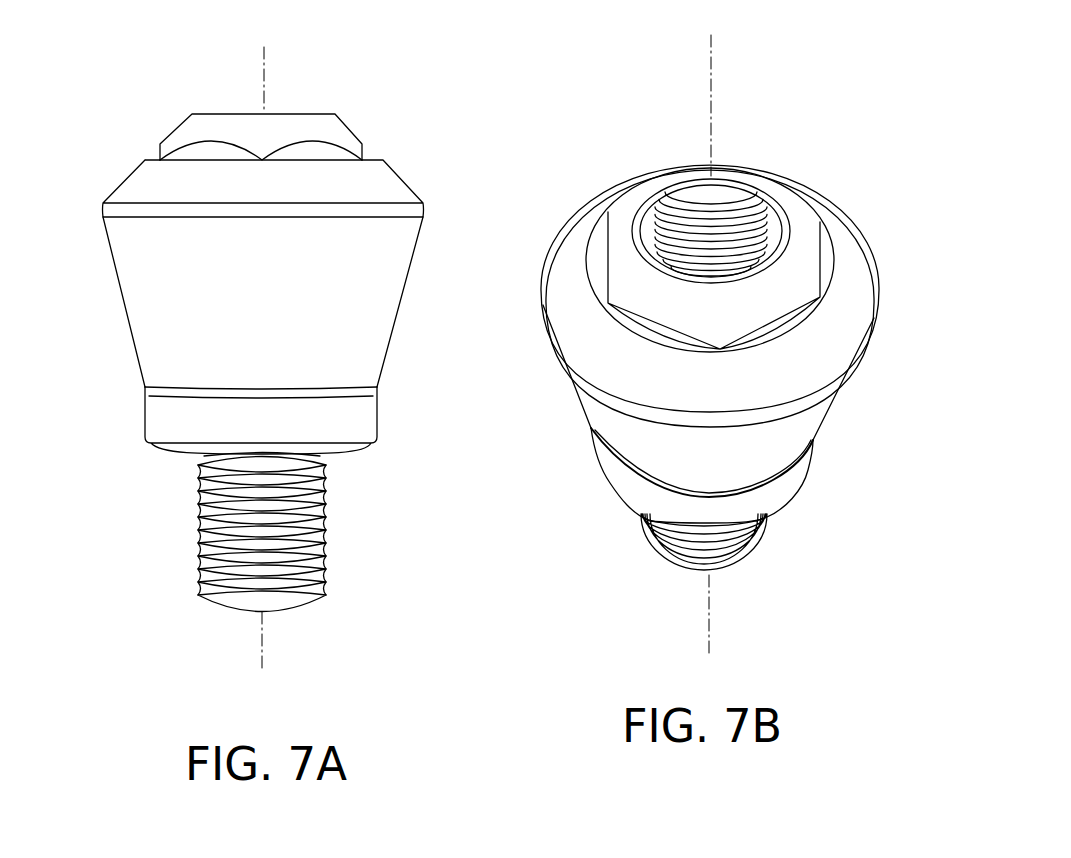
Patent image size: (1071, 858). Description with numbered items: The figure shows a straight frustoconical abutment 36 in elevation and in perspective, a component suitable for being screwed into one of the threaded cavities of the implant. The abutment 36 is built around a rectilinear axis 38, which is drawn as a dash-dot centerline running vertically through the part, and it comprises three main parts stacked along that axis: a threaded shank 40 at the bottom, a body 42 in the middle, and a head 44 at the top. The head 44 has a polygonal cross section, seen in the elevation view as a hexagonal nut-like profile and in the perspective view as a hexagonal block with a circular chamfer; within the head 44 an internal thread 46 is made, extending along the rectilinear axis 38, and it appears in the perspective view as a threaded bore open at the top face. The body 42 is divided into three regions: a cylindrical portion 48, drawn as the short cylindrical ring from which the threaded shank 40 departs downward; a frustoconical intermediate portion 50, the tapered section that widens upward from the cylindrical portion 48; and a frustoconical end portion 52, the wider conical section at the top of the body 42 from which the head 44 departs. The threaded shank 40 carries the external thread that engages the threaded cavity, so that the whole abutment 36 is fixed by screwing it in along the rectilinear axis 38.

In FIG. 7A, the straight frustoconical abutment 36 is at (152, 119).
In FIG. 7B, the straight frustoconical abutment 36 is at (602, 253).
In FIG. 7A, the rectilinear axis 38 is at (260, 645).
In FIG. 7B, the rectilinear axis 38 is at (708, 617).
In FIG. 7A, the threaded shank 40 is at (197, 528).
In FIG. 7B, the threaded shank 40 is at (753, 545).
In FIG. 7A, the body 42 is at (122, 310).
In FIG. 7B, the body 42 is at (837, 407).
In FIG. 7A, the head 44 is at (348, 127).
In FIG. 7B, the head 44 is at (803, 262).
In FIG. 7B, the internal thread 46 is at (733, 222).
In FIG. 7A, the cylindrical portion 48 is at (345, 428).
In FIG. 7B, the cylindrical portion 48 is at (632, 492).
In FIG. 7A, the frustoconical intermediate portion 50 is at (353, 305).
In FIG. 7B, the frustoconical intermediate portion 50 is at (625, 433).
In FIG. 7A, the frustoconical end portion 52 is at (382, 183).
In FIG. 7B, the frustoconical end portion 52 is at (593, 334).